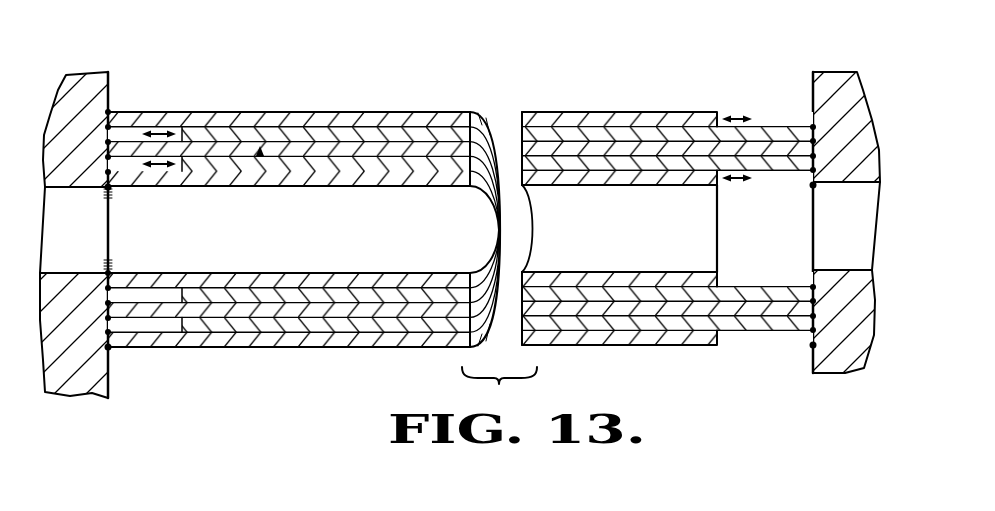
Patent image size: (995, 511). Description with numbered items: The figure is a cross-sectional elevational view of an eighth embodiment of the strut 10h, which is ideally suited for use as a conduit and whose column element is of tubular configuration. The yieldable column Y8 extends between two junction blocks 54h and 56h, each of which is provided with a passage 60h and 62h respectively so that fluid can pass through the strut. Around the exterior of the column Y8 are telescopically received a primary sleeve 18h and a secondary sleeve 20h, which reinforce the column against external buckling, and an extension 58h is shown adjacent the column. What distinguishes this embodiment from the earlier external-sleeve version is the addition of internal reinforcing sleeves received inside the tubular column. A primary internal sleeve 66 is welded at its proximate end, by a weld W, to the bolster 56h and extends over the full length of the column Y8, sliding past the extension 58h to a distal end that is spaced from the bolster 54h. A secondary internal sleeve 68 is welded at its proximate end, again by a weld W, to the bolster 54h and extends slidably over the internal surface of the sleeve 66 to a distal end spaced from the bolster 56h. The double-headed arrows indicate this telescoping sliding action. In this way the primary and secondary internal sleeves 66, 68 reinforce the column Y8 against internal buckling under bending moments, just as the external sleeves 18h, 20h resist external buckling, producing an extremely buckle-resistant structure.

The strut 10h is at (461, 219).
The primary sleeve 18h is at (222, 130).
The secondary sleeve 20h is at (156, 112).
The junction block 54h is at (94, 72).
The junction block 56h is at (840, 78).
The extension 58h is at (203, 148).
The passage 60h is at (77, 273).
The passage 62h is at (840, 186).
The primary internal sleeve 66 is at (765, 165).
The secondary internal sleeve 68 is at (685, 277).
The weld W is at (110, 300).
The yieldable column Y8 is at (367, 150).